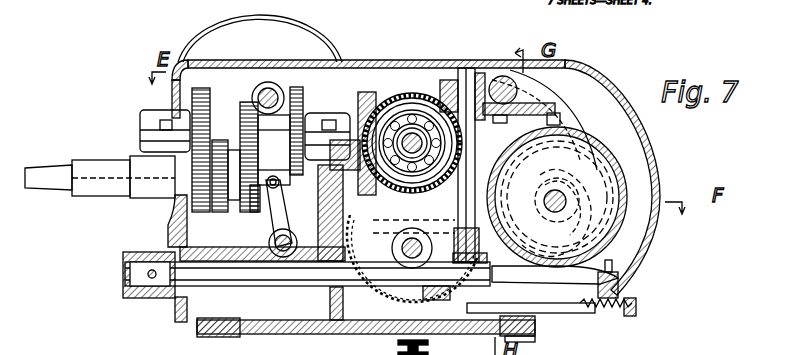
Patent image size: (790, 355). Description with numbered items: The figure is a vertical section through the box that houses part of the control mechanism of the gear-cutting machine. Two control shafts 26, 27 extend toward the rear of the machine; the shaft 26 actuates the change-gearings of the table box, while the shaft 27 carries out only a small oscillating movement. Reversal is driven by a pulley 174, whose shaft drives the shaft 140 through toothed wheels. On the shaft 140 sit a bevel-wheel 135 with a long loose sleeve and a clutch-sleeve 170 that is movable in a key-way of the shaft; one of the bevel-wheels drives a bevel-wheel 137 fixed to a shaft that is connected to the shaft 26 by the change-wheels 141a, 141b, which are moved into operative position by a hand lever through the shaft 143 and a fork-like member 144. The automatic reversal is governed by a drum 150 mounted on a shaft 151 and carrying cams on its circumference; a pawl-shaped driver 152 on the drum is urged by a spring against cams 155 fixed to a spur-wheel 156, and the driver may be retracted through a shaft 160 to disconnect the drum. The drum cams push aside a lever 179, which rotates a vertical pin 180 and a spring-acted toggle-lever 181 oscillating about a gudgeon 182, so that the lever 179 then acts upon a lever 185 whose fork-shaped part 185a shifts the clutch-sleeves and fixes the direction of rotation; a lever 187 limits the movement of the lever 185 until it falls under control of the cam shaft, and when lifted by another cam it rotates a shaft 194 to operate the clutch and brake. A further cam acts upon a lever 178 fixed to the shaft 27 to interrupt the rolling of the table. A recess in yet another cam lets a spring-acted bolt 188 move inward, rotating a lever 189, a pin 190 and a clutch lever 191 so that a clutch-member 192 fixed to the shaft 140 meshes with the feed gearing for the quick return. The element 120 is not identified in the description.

The shaft 26 is at (62, 186).
The shaft 27 is at (125, 273).
The change-wheel 141a is at (252, 90).
The change-wheel 141b is at (232, 212).
The pulley 174 is at (318, 42).
The bevel-wheel 137 is at (367, 92).
The shaft 140 is at (412, 133).
The bevel-wheel 135 is at (418, 97).
The fork-shaped part 185a is at (449, 94).
The vertical pin 180 is at (468, 72).
The lever 185 is at (500, 57).
The lever 187 is at (548, 85).
The lever 179 is at (540, 110).
The shaft 194 is at (545, 84).
The spur-wheel 156 is at (576, 134).
The driver 152 is at (590, 183).
The cam 155 is at (608, 212).
The drum 150 is at (615, 235).
The shaft 151 is at (553, 212).
The fork-like member 144 is at (289, 218).
The shaft 143 is at (283, 258).
The pin 190 is at (318, 268).
The clutch lever 191 is at (340, 130).
The clutch-sleeve 170 is at (405, 195).
The lever 189 is at (410, 236).
The shaft 120 is at (423, 250).
The shaft 160 is at (425, 352).
The lever 178 is at (603, 218).
The toggle-lever 181 is at (553, 313).
The bolt 188 is at (562, 308).
The gudgeon 182 is at (620, 290).
The clutch-member 192 is at (533, 351).